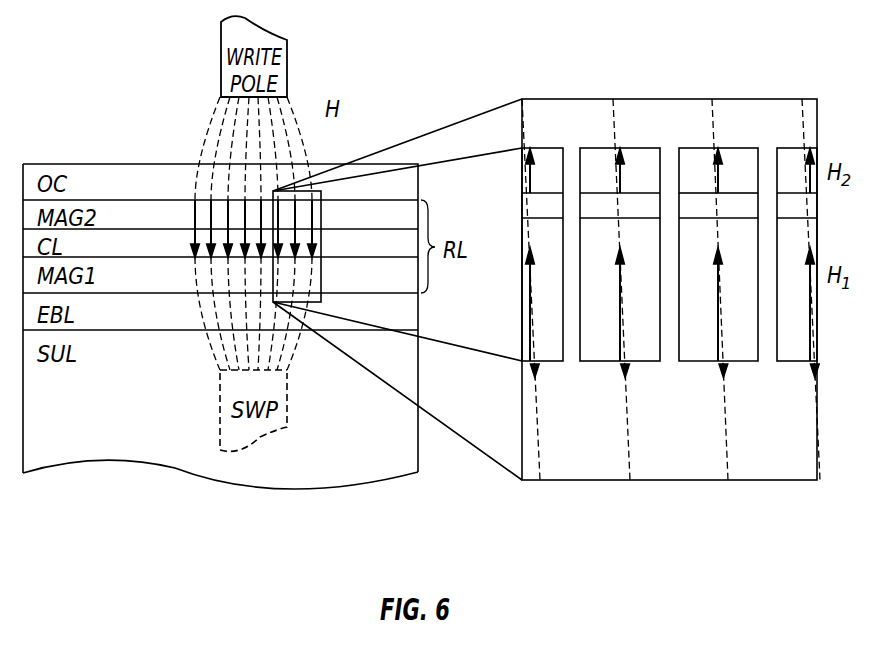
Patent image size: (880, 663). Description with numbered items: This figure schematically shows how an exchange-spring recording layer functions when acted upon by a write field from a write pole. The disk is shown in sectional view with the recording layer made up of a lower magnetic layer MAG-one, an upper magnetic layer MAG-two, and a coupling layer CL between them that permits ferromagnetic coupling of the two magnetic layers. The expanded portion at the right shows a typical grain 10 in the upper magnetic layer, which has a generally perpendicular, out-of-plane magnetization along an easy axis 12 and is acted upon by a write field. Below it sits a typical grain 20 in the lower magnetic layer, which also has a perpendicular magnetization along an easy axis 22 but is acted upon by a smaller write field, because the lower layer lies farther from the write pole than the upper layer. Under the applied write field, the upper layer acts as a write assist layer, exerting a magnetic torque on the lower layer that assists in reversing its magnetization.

The grain in MAG2 10 is at (732, 152).
The easy axis 12 is at (717, 177).
The grain in MAG1 20 is at (732, 350).
The easy axis 22 is at (717, 322).